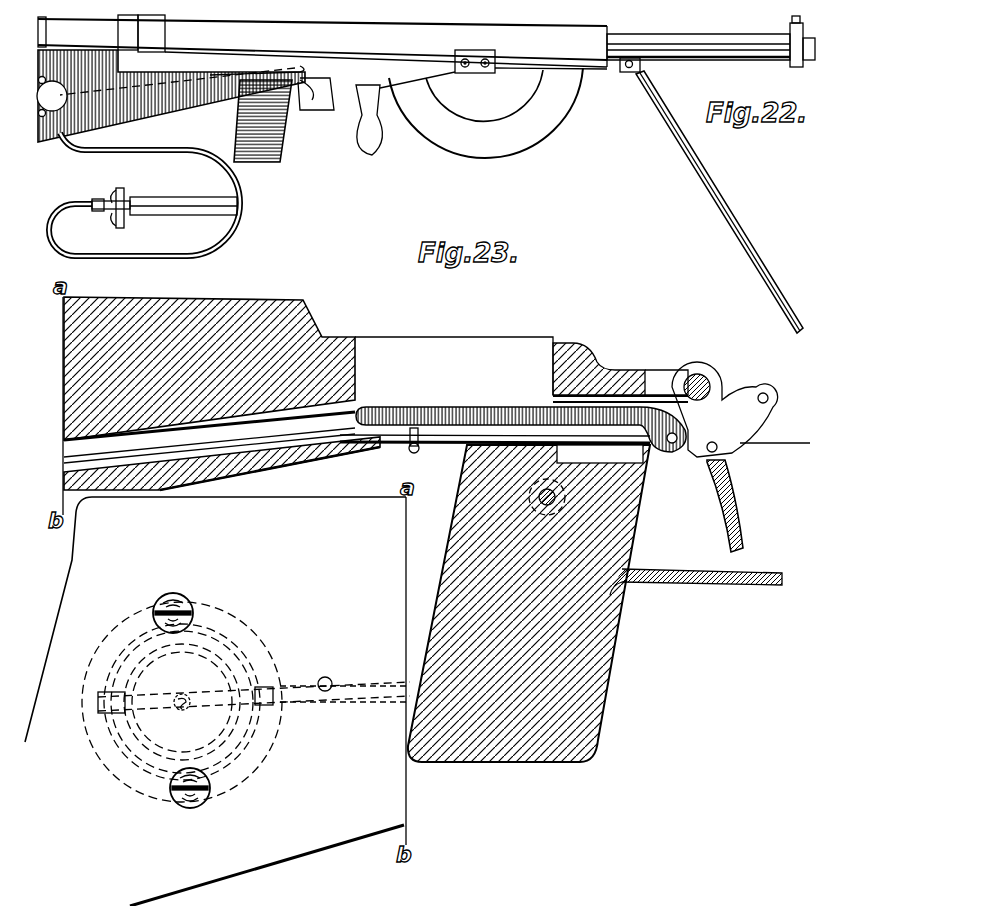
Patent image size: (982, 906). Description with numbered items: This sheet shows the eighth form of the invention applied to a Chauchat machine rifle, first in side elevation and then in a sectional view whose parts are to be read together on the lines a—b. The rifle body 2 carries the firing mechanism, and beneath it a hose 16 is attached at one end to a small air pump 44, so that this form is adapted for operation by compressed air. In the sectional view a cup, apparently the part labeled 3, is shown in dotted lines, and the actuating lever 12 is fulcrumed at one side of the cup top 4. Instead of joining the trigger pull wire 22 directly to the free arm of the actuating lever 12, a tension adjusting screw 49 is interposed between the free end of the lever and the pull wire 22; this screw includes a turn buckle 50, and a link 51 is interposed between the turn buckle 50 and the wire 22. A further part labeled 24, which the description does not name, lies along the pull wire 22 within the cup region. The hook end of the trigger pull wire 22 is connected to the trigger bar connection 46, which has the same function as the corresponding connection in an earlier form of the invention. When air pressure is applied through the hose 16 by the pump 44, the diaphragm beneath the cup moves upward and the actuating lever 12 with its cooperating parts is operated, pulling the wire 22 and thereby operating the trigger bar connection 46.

In FIG. 22, the stock / receiver body 2 is at (254, 32).
In FIG. 23, the stock / receiver body 2 is at (295, 341).
In FIG. 23, the disc 3 is at (124, 777).
In FIG. 23, the cup top 4 is at (123, 758).
In FIG. 23, the actuating lever 12 is at (103, 713).
In FIG. 22, the hose 16 is at (163, 194).
In FIG. 23, the trigger pull wire 22 is at (272, 430).
In FIG. 23, the pivot rod 24 is at (98, 705).
In FIG. 22, the air pump 44 is at (197, 196).
In FIG. 22, the trigger bar connection 46 is at (195, 75).
In FIG. 23, the trigger bar connection 46 is at (486, 412).
In FIG. 23, the tension adjusting screw 49 is at (158, 690).
In FIG. 23, the turn buckle 50 is at (290, 704).
In FIG. 23, the link 51 is at (368, 700).